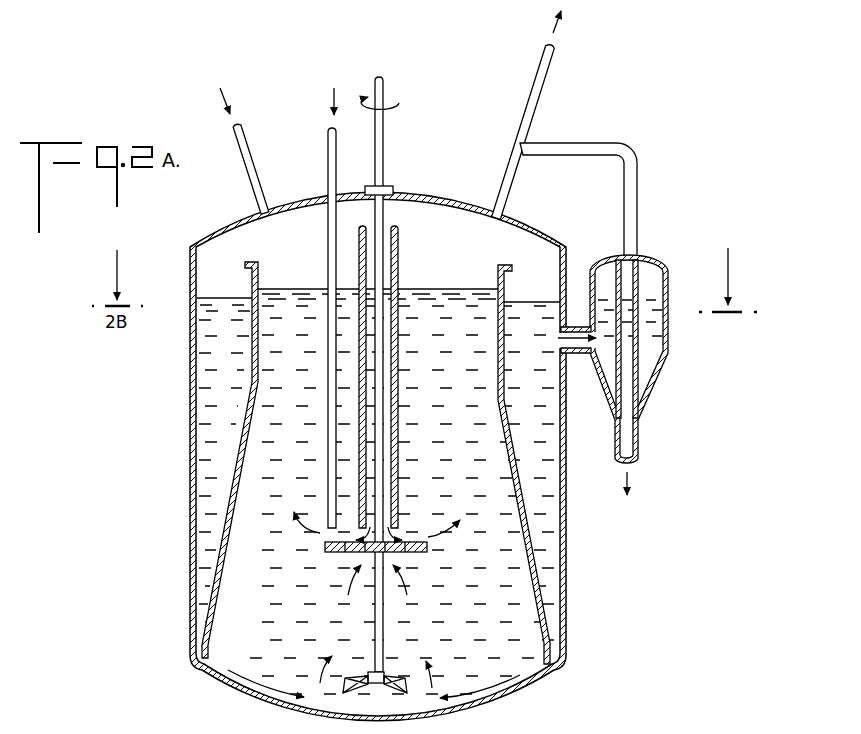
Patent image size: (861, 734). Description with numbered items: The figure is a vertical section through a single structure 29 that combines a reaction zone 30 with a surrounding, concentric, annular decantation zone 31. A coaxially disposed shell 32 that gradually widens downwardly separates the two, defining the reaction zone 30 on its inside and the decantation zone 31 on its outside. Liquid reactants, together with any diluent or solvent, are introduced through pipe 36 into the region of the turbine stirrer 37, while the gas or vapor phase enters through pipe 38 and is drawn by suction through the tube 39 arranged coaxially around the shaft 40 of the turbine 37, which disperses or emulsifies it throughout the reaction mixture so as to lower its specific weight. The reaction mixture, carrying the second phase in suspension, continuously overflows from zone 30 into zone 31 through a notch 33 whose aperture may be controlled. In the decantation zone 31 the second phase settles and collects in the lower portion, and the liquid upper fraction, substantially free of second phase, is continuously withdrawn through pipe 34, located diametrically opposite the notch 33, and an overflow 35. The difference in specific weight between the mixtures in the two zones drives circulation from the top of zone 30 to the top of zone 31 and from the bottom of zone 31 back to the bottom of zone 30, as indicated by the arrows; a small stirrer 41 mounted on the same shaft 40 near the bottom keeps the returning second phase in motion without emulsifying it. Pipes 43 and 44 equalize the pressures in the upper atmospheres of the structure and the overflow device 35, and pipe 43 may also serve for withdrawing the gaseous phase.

The structure 29 is at (560, 530).
The reaction zone 30 is at (262, 438).
The decantation zone 31 is at (217, 357).
The shell 32 is at (500, 367).
The notch 33 is at (253, 283).
The pipe 34 is at (580, 353).
The overflow 35 is at (628, 290).
The pipe 36 is at (332, 163).
The turbine stirrer 37 is at (420, 552).
The pipe 38 is at (250, 147).
The tube 39 is at (397, 265).
The shaft 40 is at (380, 404).
The stirrer 41 is at (383, 673).
The pipe 43 is at (540, 72).
The pipe 44 is at (637, 188).